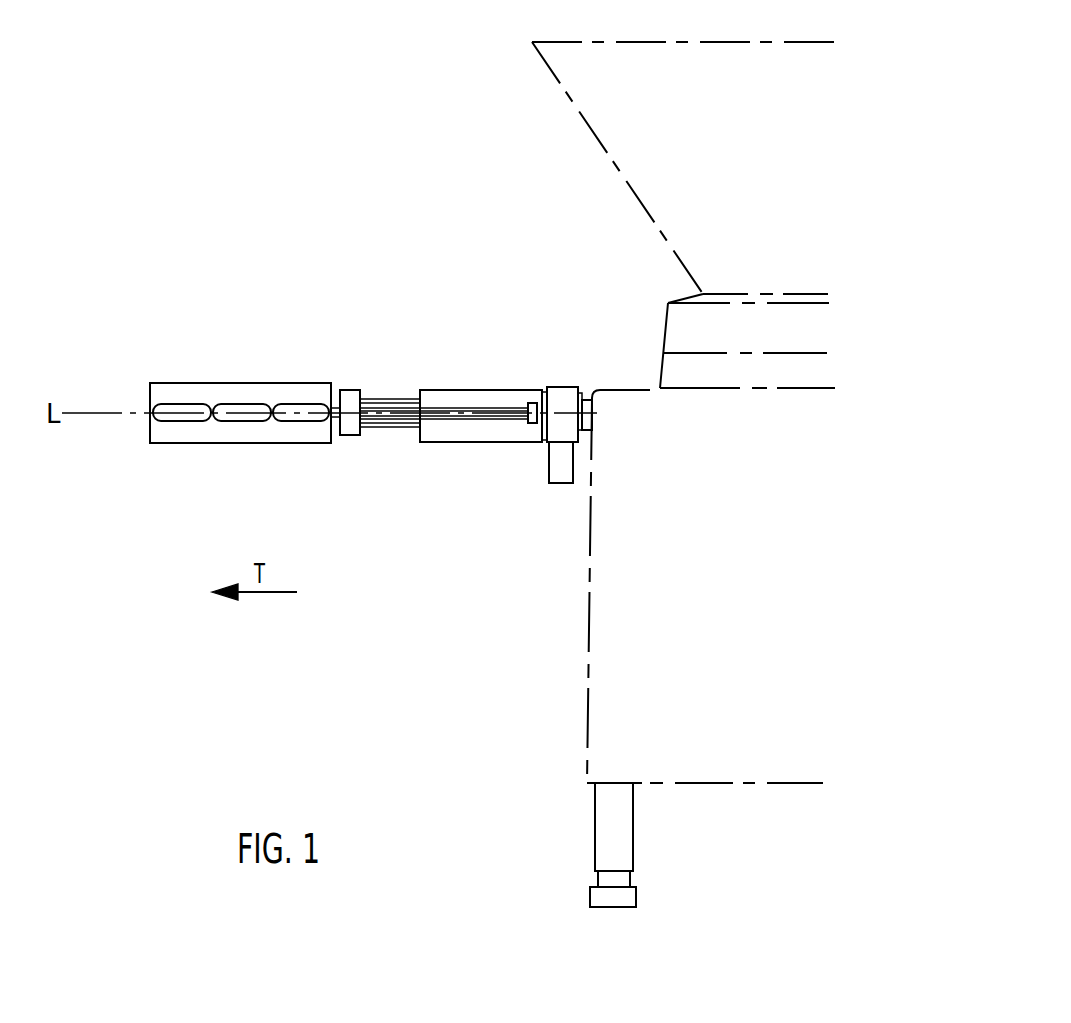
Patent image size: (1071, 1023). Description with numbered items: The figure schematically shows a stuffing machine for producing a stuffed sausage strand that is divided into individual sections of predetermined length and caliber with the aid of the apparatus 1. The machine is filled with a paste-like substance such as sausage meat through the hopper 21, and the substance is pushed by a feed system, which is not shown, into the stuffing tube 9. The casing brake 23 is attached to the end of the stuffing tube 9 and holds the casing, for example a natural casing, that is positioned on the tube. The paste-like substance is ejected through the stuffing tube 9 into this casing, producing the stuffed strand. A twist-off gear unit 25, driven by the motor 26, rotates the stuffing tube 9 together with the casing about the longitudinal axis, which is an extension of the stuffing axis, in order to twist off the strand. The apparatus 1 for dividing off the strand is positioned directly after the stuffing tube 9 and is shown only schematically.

The apparatus 1 is at (238, 381).
The stuffing tube 9 is at (475, 408).
The hopper 21 is at (573, 111).
The casing brake 23 is at (352, 390).
The twist-off gear unit 25 is at (564, 387).
The motor 26 is at (549, 470).